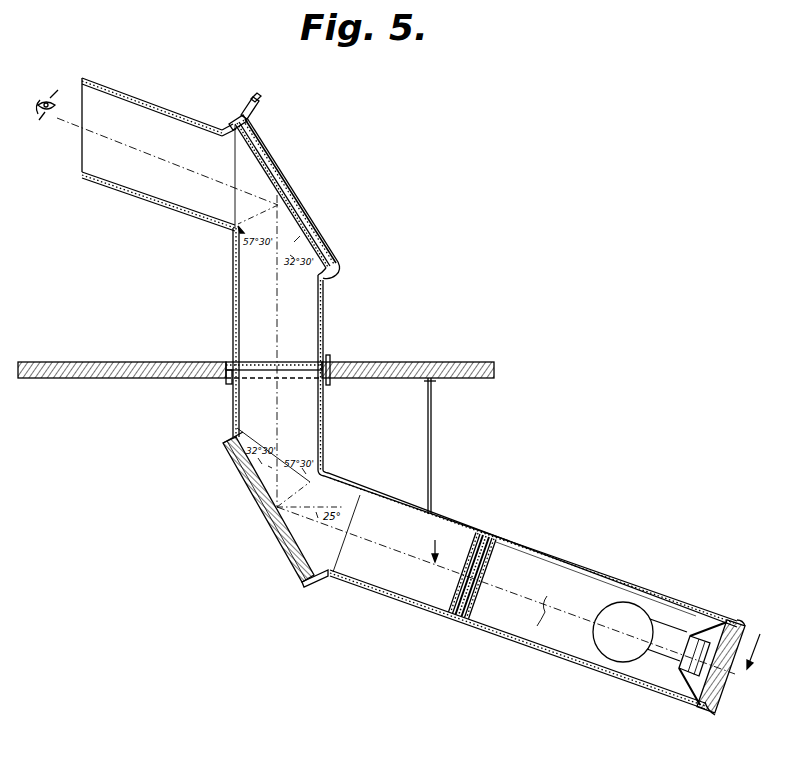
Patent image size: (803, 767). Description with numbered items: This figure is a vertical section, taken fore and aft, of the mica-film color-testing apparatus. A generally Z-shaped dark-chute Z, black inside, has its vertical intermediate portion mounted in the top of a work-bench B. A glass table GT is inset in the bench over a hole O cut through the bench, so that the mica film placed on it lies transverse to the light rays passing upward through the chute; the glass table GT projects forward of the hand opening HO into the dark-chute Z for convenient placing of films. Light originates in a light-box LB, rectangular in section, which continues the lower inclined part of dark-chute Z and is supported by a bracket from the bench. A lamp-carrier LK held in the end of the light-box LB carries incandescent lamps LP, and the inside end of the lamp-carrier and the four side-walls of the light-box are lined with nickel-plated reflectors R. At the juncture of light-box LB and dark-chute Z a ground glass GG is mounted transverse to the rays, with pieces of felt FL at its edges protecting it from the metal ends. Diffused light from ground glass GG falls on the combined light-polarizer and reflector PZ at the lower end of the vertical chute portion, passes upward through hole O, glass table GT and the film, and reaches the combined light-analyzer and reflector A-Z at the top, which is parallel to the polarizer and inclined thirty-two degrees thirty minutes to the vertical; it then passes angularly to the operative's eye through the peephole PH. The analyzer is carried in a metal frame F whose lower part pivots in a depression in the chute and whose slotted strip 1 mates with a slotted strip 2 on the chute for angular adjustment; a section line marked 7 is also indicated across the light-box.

The dark-chute Z is at (435, 389).
The slotted strip 2 is at (238, 110).
The slotted strip 1 is at (256, 108).
The peephole PH is at (82, 150).
The metal frame F is at (282, 188).
The combined light-analyzer and reflector A-Z is at (324, 246).
The hand opening HO is at (238, 305).
The glass table GT is at (245, 384).
The bench B is at (80, 380).
The hole O is at (232, 394).
The combined light-polarizer and reflector PZ is at (266, 522).
The section line 7- 7 is at (546, 599).
The ground glass GG is at (488, 533).
The felt FL is at (478, 532).
The reflectors R is at (686, 696).
The light-box LB is at (528, 638).
The incandescent lamps LP is at (610, 657).
The lamp-carrier LK is at (716, 692).